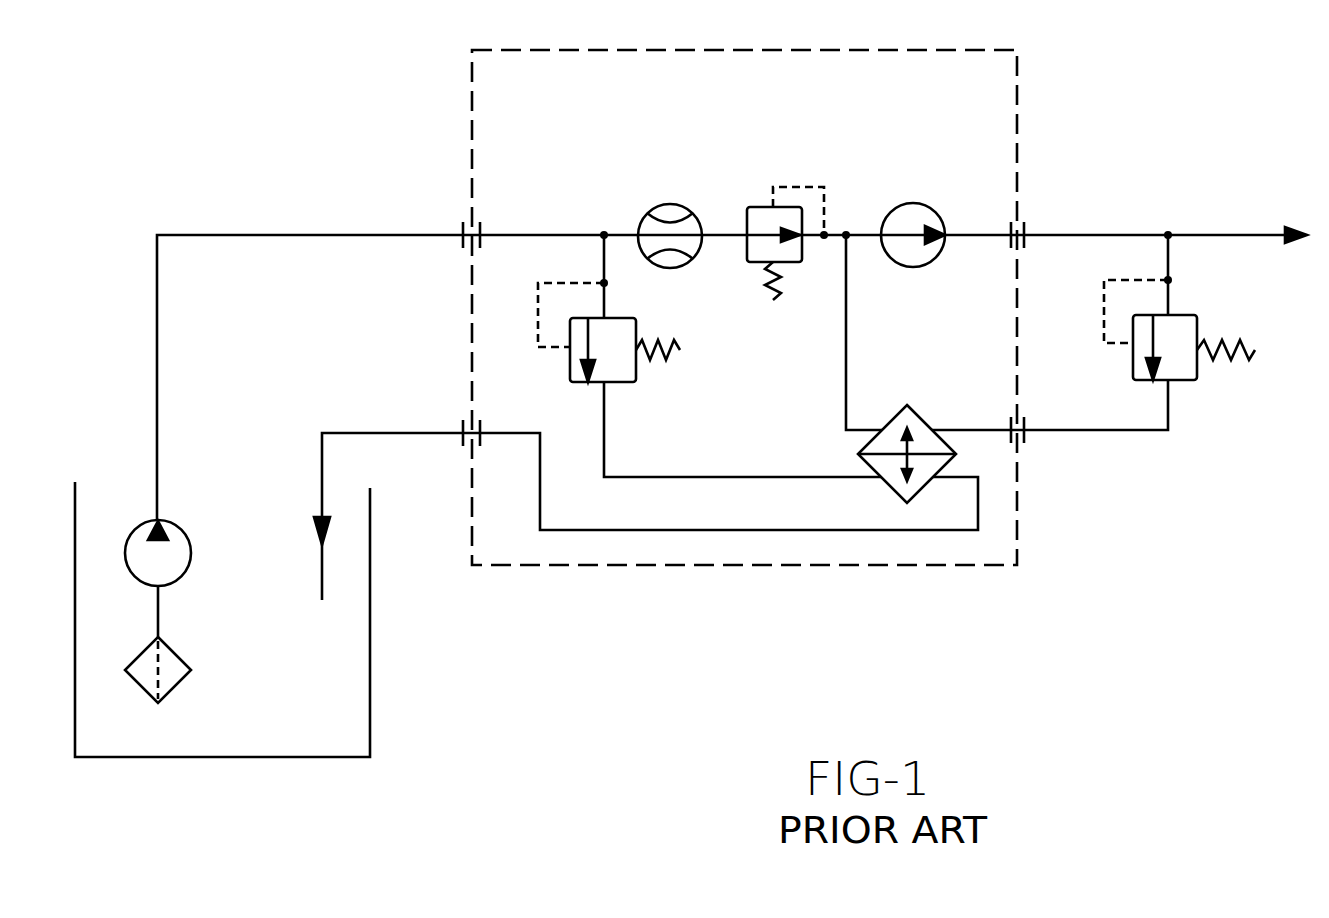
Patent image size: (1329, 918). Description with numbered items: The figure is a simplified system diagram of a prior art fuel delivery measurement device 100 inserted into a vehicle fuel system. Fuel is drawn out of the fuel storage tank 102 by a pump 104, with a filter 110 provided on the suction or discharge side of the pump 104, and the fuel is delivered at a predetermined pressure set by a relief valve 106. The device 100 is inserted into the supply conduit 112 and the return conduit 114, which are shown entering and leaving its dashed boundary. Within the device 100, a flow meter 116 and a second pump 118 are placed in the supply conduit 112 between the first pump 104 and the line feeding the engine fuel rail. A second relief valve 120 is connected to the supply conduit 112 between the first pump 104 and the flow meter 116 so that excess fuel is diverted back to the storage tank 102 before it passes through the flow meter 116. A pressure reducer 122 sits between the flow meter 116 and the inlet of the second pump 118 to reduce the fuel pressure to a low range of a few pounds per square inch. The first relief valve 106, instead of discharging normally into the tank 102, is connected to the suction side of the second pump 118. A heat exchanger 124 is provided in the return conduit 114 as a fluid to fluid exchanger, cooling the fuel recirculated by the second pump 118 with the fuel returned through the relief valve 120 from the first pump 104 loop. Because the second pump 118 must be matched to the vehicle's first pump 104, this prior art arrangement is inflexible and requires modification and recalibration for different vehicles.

The conventional fuel delivery measurement device 100 is at (746, 48).
The fuel storage tank 102 is at (370, 658).
The pump 104 is at (172, 524).
The relief valve 106 is at (1190, 382).
The filter 110 is at (180, 650).
The supply conduit 112 is at (285, 235).
The return conduit 114 is at (372, 433).
The flow meter 116 is at (645, 212).
The second pump 118 is at (891, 210).
The second relief valve 120 is at (622, 383).
The pressure reducer 122 is at (750, 207).
The heat exchanger 124 is at (916, 412).